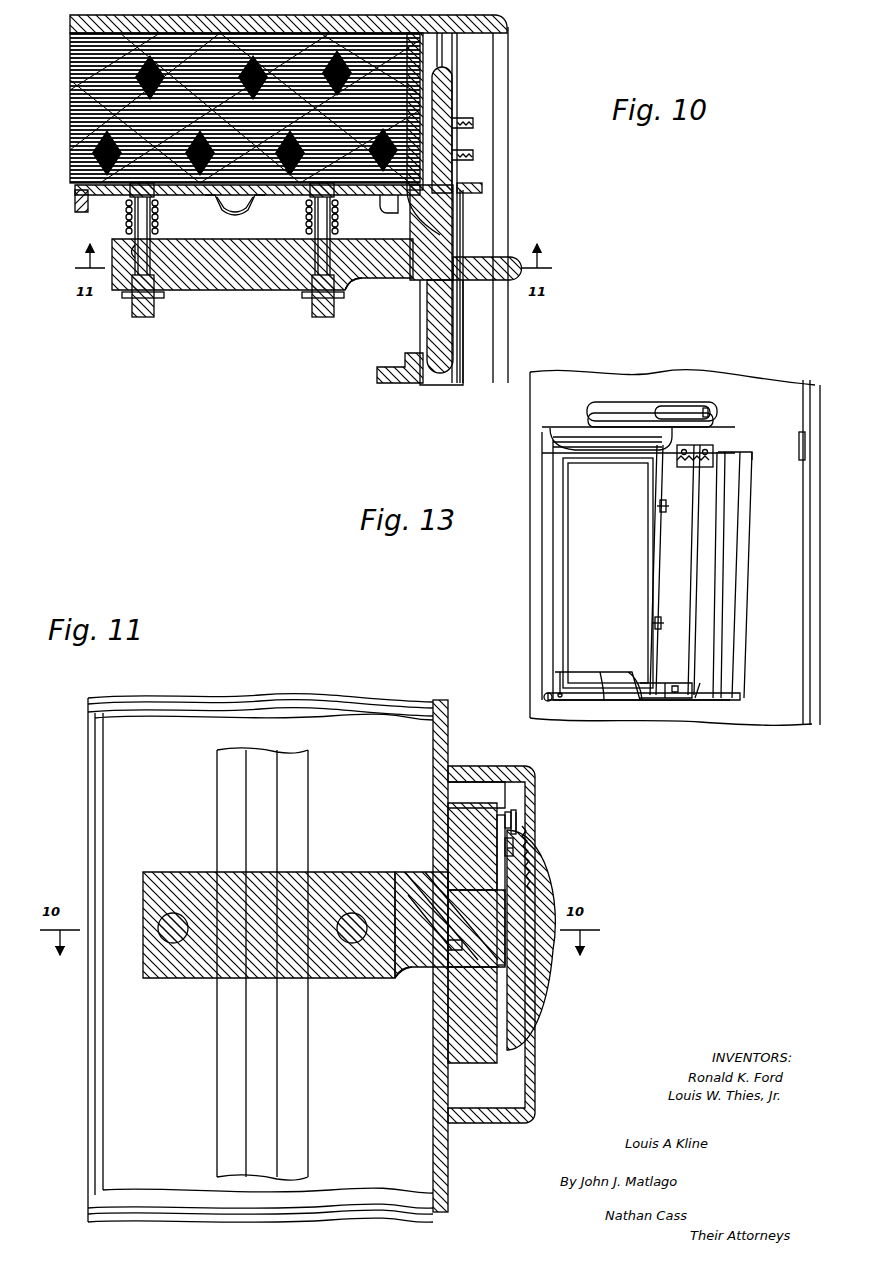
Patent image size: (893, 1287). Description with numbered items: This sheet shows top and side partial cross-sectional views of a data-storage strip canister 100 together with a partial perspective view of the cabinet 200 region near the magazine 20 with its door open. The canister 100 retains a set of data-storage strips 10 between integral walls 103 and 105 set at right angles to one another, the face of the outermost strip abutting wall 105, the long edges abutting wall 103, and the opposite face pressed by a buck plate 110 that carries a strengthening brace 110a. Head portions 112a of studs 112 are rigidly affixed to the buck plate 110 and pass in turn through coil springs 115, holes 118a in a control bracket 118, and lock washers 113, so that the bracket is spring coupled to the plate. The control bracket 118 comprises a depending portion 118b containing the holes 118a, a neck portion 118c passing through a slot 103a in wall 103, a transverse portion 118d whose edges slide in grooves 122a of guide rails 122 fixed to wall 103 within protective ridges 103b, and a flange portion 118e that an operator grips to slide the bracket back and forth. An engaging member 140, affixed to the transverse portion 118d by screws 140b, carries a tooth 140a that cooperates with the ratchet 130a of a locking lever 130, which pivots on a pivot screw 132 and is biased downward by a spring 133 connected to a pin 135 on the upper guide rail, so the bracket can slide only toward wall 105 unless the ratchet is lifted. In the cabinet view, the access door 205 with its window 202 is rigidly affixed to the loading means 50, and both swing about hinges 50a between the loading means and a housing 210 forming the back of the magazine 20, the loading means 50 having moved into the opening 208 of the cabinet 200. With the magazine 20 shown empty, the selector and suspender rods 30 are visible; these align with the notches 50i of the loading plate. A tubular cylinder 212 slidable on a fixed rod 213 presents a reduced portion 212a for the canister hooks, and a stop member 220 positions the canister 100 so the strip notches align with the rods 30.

In FIG. 10, the data-storage strip 10 is at (72, 100).
In FIG. 11, the data-storage strip 10 is at (355, 702).
In FIG. 13, the magazine 20 is at (540, 578).
In FIG. 13, the selector and suspender rods 30 is at (600, 446).
In FIG. 13, the loading means 50 is at (697, 603).
In FIG. 13, the hinges 50a is at (667, 506).
In FIG. 13, the notches of the loading plate 50i is at (690, 462).
In FIG. 10, the data-storage strip canister 100 is at (295, 345).
In FIG. 11, the data-storage strip canister 100 is at (462, 748).
In FIG. 10, the wall 103 is at (415, 60).
In FIG. 11, the wall 103 is at (446, 715).
In FIG. 10, the slot 103a is at (410, 205).
In FIG. 11, the slot 103a is at (450, 950).
In FIG. 10, the protective ridges 103b is at (500, 22).
In FIG. 11, the protective ridges 103b is at (475, 767).
In FIG. 10, the wall 105 is at (275, 22).
In FIG. 11, the wall 105 is at (160, 702).
In FIG. 10, the buck plate 110 is at (75, 196).
In FIG. 11, the buck plate 110 is at (130, 775).
In FIG. 10, the strengthening brace 110a is at (220, 208).
In FIG. 11, the strengthening brace 110a is at (300, 810).
In FIG. 10, the studs 112 is at (140, 317).
In FIG. 11, the studs 112 is at (158, 928).
In FIG. 10, the head portions of the studs 112a is at (130, 192).
In FIG. 10, the lock washers 113 is at (125, 298).
In FIG. 10, the coil springs 115 is at (125, 212).
In FIG. 10, the control bracket 118 is at (355, 290).
In FIG. 11, the control bracket 118 is at (185, 872).
In FIG. 10, the holes 118a is at (140, 255).
In FIG. 11, the holes 118a is at (182, 915).
In FIG. 10, the depending portion 118b is at (232, 268).
In FIG. 11, the depending portion 118b is at (143, 885).
In FIG. 10, the neck portion 118c is at (380, 258).
In FIG. 11, the neck portion 118c is at (402, 970).
In FIG. 10, the transverse portion 118d is at (440, 205).
In FIG. 11, the transverse portion 118d is at (415, 885).
In FIG. 10, the flange portion 118e is at (475, 268).
In FIG. 11, the flange portion 118e is at (540, 1020).
In FIG. 10, the guide rails 122 is at (457, 68).
In FIG. 11, the guide rails 122 is at (465, 806).
In FIG. 10, the grooves 122a is at (445, 52).
In FIG. 11, the grooves 122a is at (455, 925).
In FIG. 11, the locking lever 130 is at (500, 855).
In FIG. 11, the ratchet 130a is at (535, 888).
In FIG. 11, the pivot screw 132 is at (513, 850).
In FIG. 11, the spring 133 is at (508, 812).
In FIG. 11, the pin 135 is at (518, 815).
In FIG. 10, the engaging member 140 is at (457, 86).
In FIG. 10, the tooth 140a is at (480, 188).
In FIG. 11, the tooth 140a is at (490, 945).
In FIG. 10, the screws 140b is at (470, 130).
In FIG. 13, the cabinet 200 is at (796, 708).
In FIG. 13, the window 202 is at (720, 540).
In FIG. 13, the access door 205 is at (735, 586).
In FIG. 13, the opening 208 is at (732, 622).
In FIG. 13, the housing 210 is at (624, 581).
In FIG. 13, the tubular cylinder 212 is at (676, 418).
In FIG. 13, the reduced portion 212a is at (665, 396).
In FIG. 13, the fixed rod 213 is at (620, 418).
In FIG. 13, the stop member 220 is at (642, 700).